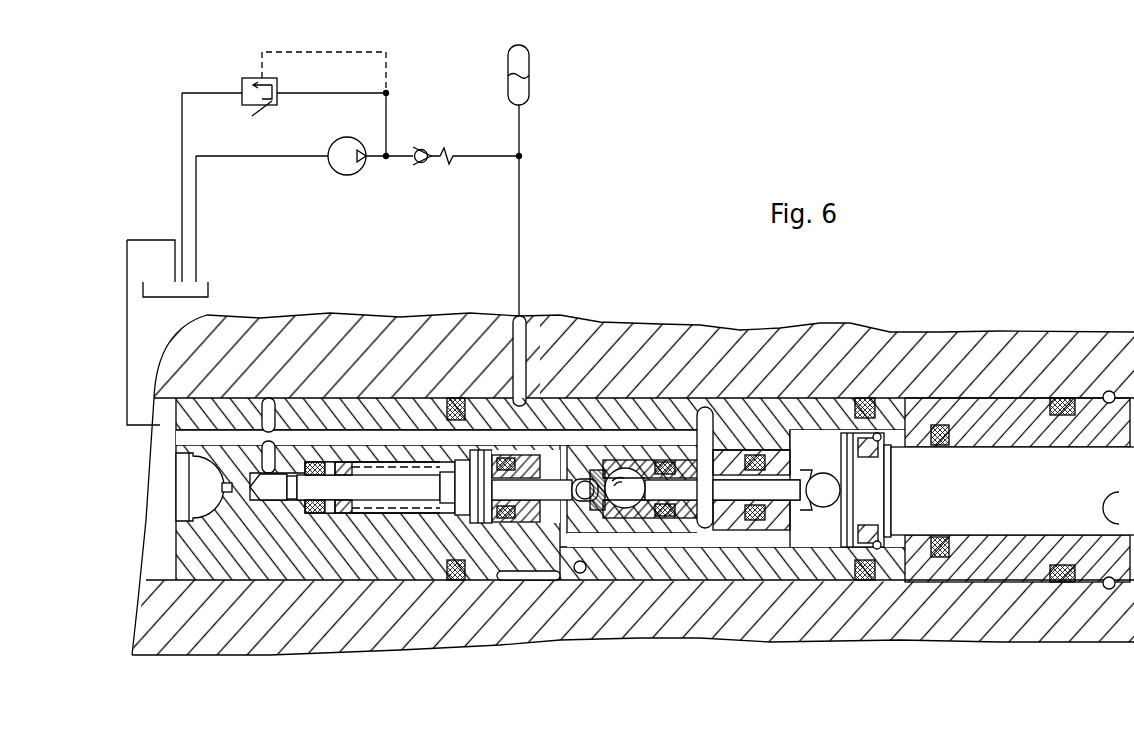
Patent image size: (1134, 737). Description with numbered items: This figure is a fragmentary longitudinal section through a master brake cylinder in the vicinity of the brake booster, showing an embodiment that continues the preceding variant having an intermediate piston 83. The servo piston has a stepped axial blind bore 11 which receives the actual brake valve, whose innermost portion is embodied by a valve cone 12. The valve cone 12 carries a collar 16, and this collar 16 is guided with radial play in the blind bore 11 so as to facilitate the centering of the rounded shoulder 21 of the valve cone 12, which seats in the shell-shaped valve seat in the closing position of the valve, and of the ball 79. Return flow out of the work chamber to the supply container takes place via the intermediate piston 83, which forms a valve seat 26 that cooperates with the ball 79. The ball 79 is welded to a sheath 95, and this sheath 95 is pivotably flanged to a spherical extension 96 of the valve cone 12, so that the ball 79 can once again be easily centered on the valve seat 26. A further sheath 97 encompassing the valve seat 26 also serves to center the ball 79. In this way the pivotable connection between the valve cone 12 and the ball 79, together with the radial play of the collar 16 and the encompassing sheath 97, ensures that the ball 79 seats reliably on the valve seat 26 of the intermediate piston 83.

The stepped axial blind bore 11 is at (372, 513).
The valve cone 12 is at (420, 480).
The collar 16 is at (462, 507).
The rounded shoulder 21 is at (493, 520).
The valve seat 26 is at (642, 512).
The ball 79 is at (637, 493).
The intermediate piston 83 is at (740, 525).
The sheath 95 is at (593, 505).
The spherical extension 96 is at (577, 493).
The sheath 97 is at (613, 518).